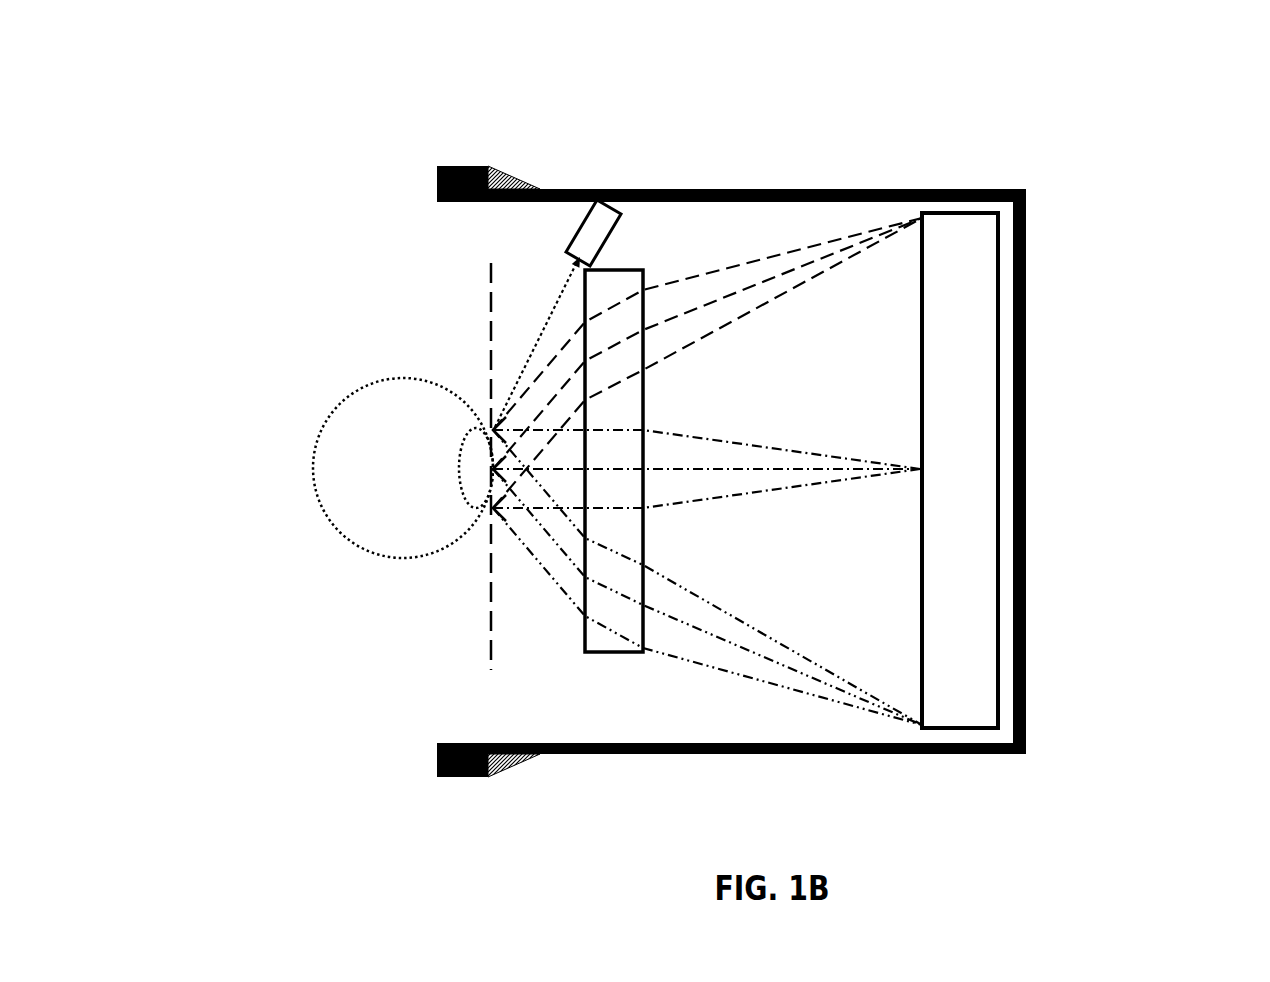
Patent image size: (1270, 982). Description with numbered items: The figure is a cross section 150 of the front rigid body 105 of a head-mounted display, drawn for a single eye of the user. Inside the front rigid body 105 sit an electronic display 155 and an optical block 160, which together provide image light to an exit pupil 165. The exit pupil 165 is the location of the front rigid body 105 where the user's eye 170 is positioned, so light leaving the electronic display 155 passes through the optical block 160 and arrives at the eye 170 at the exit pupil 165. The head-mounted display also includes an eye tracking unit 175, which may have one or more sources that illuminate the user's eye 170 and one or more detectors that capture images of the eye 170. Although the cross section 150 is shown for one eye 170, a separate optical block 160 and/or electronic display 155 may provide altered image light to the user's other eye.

The cross section 150 is at (151, 57).
The front rigid body 105 is at (1010, 178).
The electronic display 155 is at (1003, 253).
The optical block 160 is at (643, 270).
The exit pupil 165 is at (488, 603).
The eye 170 is at (403, 470).
The eye tracking unit 175 is at (598, 200).